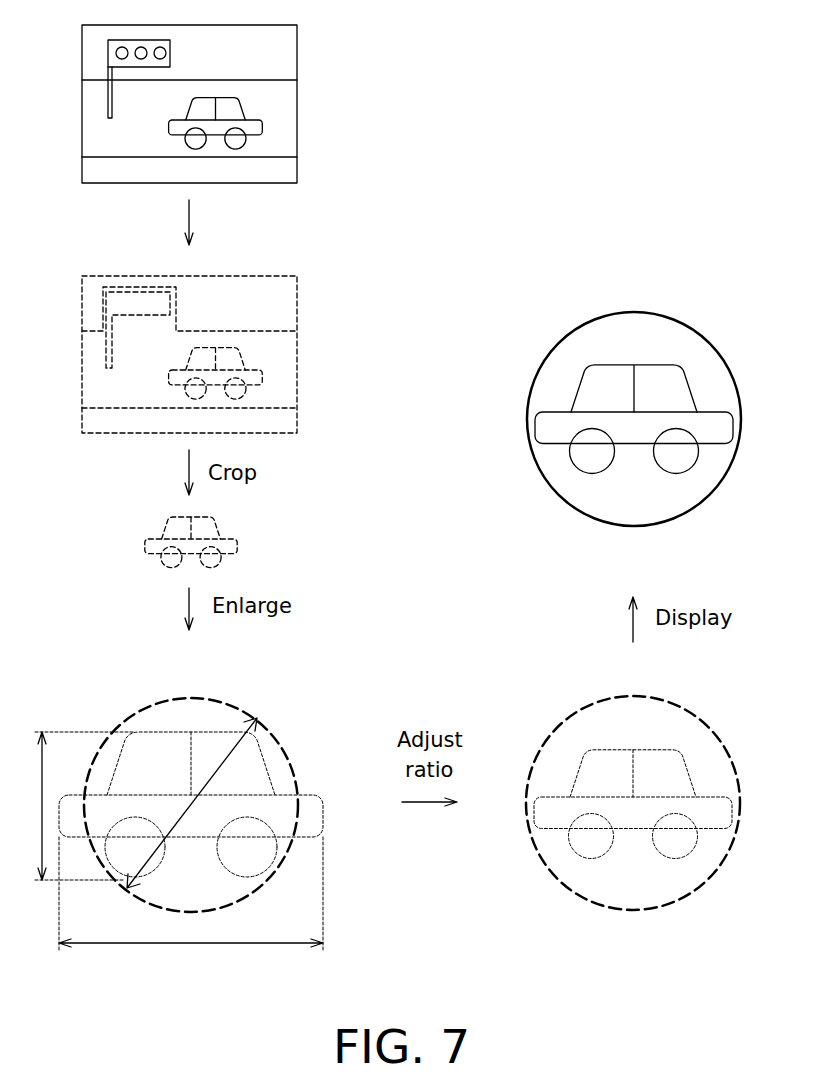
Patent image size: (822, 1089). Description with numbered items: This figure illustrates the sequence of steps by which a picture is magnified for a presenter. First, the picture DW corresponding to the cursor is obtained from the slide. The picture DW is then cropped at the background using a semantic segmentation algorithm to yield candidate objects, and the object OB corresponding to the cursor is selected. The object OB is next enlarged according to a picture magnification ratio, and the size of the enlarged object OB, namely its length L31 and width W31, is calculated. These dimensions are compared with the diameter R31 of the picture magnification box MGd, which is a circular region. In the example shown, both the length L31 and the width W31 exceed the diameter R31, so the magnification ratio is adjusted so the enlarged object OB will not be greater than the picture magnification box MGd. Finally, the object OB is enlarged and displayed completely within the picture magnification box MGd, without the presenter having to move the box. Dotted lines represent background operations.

The picture DW is at (297, 103).
The object OB is at (220, 527).
The picture magnification box MGd is at (145, 707).
The diameter R31 is at (218, 760).
The length L31 is at (43, 768).
The width W31 is at (191, 906).